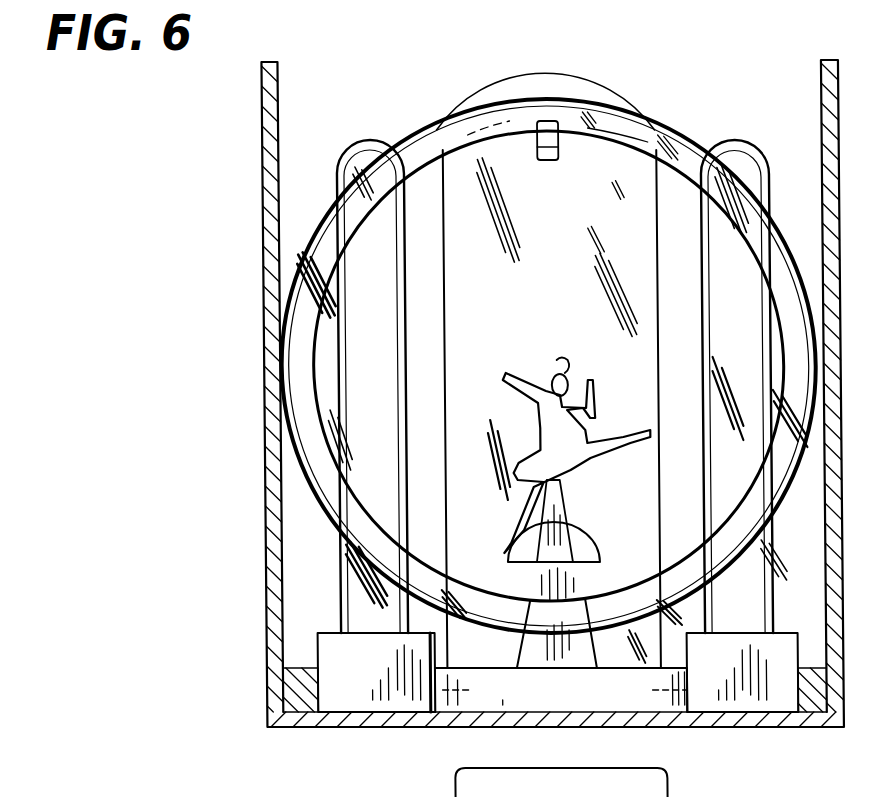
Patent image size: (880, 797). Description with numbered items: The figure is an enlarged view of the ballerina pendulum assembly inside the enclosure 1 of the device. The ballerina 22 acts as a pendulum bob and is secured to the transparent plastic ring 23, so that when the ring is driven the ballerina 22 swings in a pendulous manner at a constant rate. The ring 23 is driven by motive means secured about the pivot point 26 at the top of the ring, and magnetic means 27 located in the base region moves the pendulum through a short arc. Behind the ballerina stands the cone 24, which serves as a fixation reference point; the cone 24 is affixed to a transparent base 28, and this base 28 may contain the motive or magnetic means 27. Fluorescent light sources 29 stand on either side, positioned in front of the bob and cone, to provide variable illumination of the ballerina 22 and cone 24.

The enclosure 1 is at (262, 623).
The ballerina 22 is at (562, 370).
The ring 23 is at (435, 138).
The cone 24 is at (565, 522).
The pivot point 26 is at (542, 148).
The magnetic means 27 is at (429, 707).
The transparent base 28 is at (498, 668).
The fluorescent light sources 29 is at (350, 157).